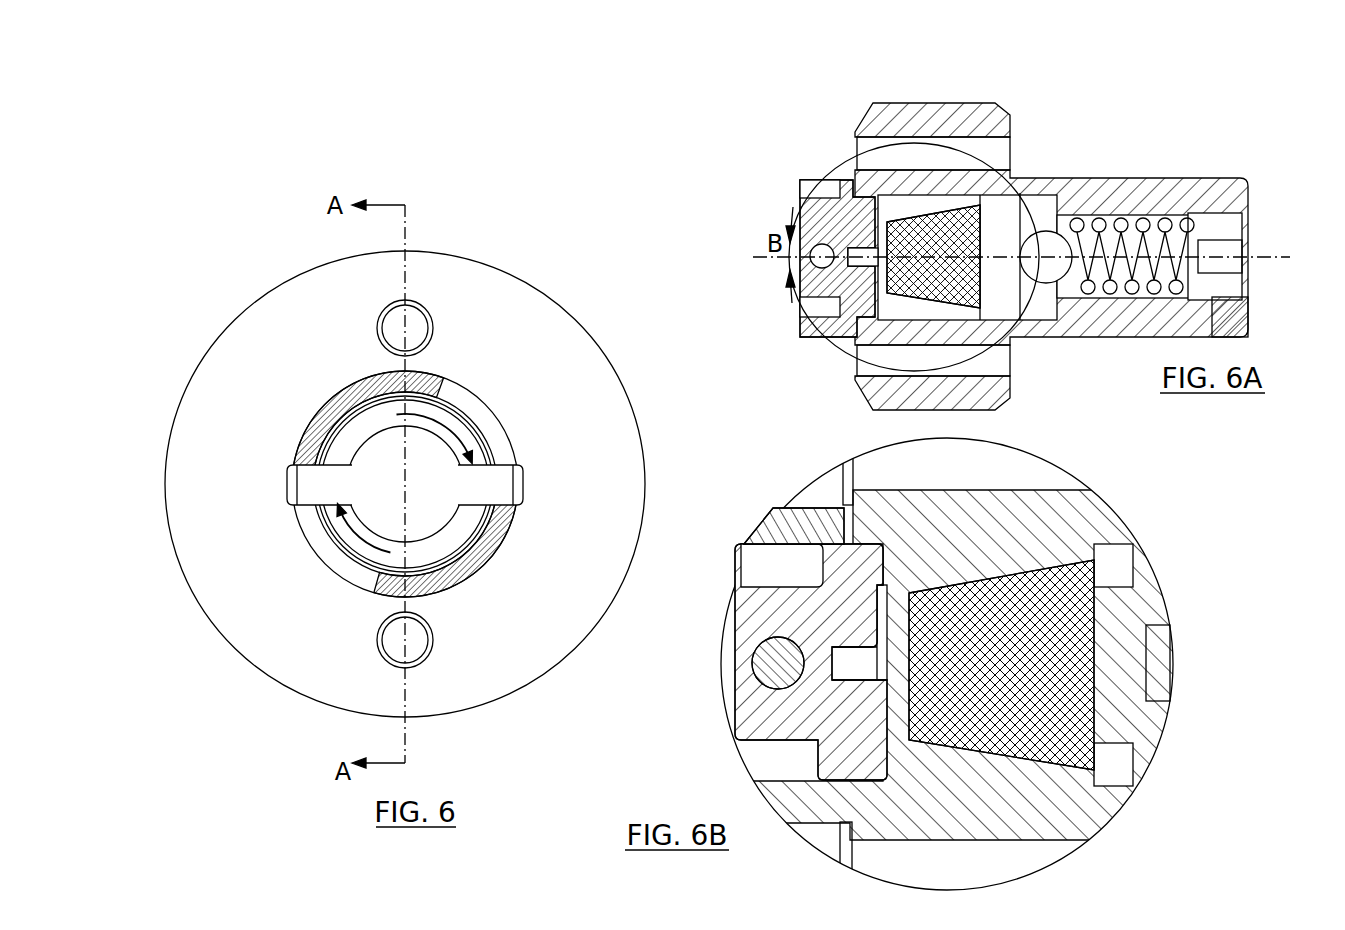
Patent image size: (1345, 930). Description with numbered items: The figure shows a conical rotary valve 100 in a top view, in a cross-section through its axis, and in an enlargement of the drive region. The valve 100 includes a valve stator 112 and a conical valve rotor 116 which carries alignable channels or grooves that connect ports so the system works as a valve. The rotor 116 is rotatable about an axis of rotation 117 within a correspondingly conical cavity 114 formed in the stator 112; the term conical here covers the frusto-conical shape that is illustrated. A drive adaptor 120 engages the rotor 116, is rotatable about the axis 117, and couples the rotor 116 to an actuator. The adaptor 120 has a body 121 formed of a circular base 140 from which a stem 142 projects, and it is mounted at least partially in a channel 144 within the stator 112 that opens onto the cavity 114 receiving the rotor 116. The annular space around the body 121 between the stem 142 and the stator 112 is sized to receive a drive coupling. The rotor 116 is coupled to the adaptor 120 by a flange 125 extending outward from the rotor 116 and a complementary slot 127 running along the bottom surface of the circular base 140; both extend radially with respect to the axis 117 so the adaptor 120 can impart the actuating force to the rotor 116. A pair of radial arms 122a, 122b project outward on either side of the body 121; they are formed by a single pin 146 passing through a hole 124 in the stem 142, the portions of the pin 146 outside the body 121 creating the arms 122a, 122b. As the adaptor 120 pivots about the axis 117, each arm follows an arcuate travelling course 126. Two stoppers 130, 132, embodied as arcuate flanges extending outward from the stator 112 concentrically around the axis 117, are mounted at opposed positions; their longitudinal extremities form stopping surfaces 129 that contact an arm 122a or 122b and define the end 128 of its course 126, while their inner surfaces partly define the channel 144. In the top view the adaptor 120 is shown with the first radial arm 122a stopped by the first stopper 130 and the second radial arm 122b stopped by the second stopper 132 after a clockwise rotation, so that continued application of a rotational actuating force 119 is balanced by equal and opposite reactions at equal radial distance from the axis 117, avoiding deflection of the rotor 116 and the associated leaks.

In FIG. 6, the conical rotary valve 100 is at (253, 200).
In FIG. 6A, the conical rotary valve 100 is at (1177, 104).
In FIG. 6, the valve stator 112 is at (236, 621).
In FIG. 6A, the valve stator 112 is at (1007, 180).
In FIG. 6B, the valve stator 112 is at (1098, 519).
In FIG. 6B, the conical cavity 114 is at (1118, 553).
In FIG. 6A, the conical valve rotor 116 is at (957, 283).
In FIG. 6B, the conical valve rotor 116 is at (1063, 644).
In FIG. 6A, the axis of rotation 117 is at (1262, 255).
In FIG. 6, the rotational actuating force 119 is at (462, 357).
In FIG. 6, the drive adaptor 120 is at (457, 499).
In FIG. 6A, the drive adaptor 120 is at (779, 231).
In FIG. 6B, the drive adaptor 120 is at (738, 673).
In FIG. 6, the body 121 is at (387, 458).
In FIG. 6A, the body 121 is at (813, 274).
In FIG. 6B, the body 121 is at (760, 730).
In FIG. 6, the first radial arm 122a is at (305, 486).
In FIG. 6, the second radial arm 122b is at (507, 484).
In FIG. 6B, the hole 124 is at (754, 662).
In FIG. 6B, the flange 125 is at (863, 682).
In FIG. 6, the arcuate travelling course 126 is at (278, 552).
In FIG. 6B, the slot 127 is at (830, 679).
In FIG. 6, the end of course 128 is at (265, 462).
In FIG. 6, the stopping surfaces 129 is at (437, 372).
In FIG. 6, the first stopper 130 is at (328, 432).
In FIG. 6, the second stopper 132 is at (460, 600).
In FIG. 6A, the circular base 140 is at (857, 205).
In FIG. 6B, the circular base 140 is at (844, 562).
In FIG. 6A, the stem 142 is at (820, 222).
In FIG. 6B, the stem 142 is at (767, 598).
In FIG. 6B, the channel 144 is at (775, 562).
In FIG. 6B, the pin 146 is at (767, 674).